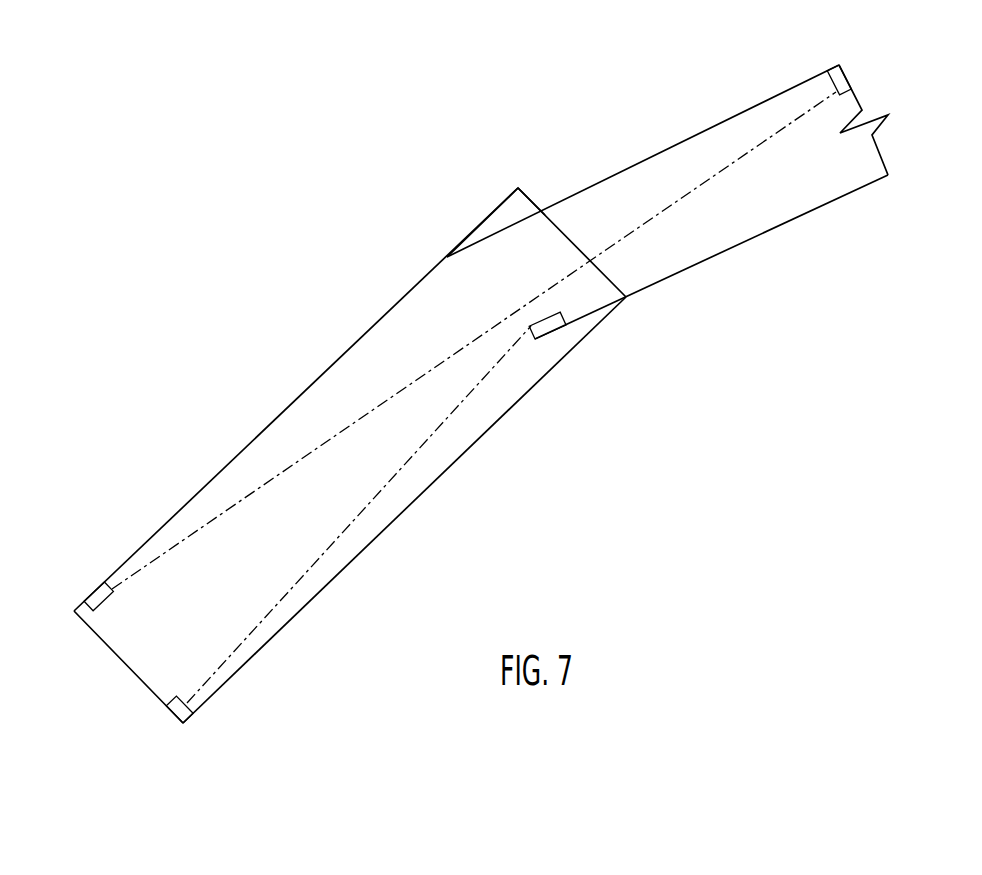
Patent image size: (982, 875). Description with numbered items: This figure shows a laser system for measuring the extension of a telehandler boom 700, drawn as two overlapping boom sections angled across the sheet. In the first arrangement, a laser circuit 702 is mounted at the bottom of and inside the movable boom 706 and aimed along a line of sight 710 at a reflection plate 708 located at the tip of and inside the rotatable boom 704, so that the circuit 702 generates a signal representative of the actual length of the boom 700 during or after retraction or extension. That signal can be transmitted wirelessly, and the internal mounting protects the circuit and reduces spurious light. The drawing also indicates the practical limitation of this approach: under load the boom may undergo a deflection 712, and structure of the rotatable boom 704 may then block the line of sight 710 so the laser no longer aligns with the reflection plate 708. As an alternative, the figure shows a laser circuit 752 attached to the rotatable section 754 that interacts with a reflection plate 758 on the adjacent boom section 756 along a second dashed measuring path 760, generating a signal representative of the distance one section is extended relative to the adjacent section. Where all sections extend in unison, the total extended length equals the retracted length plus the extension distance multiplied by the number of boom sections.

The boom 700 is at (503, 68).
The laser circuit 702 is at (98, 600).
The rotatable boom 704 is at (282, 438).
The movable boom 706 is at (653, 173).
The reflection plate 708 is at (838, 73).
The line of sight 710 is at (387, 393).
The deflection 712 is at (522, 217).
The laser circuit 752 is at (545, 324).
The rotatable section 754 is at (388, 508).
The adjacent boom section 756 is at (780, 207).
The reflection plate 758 is at (188, 708).
The second fold line 760 is at (447, 425).